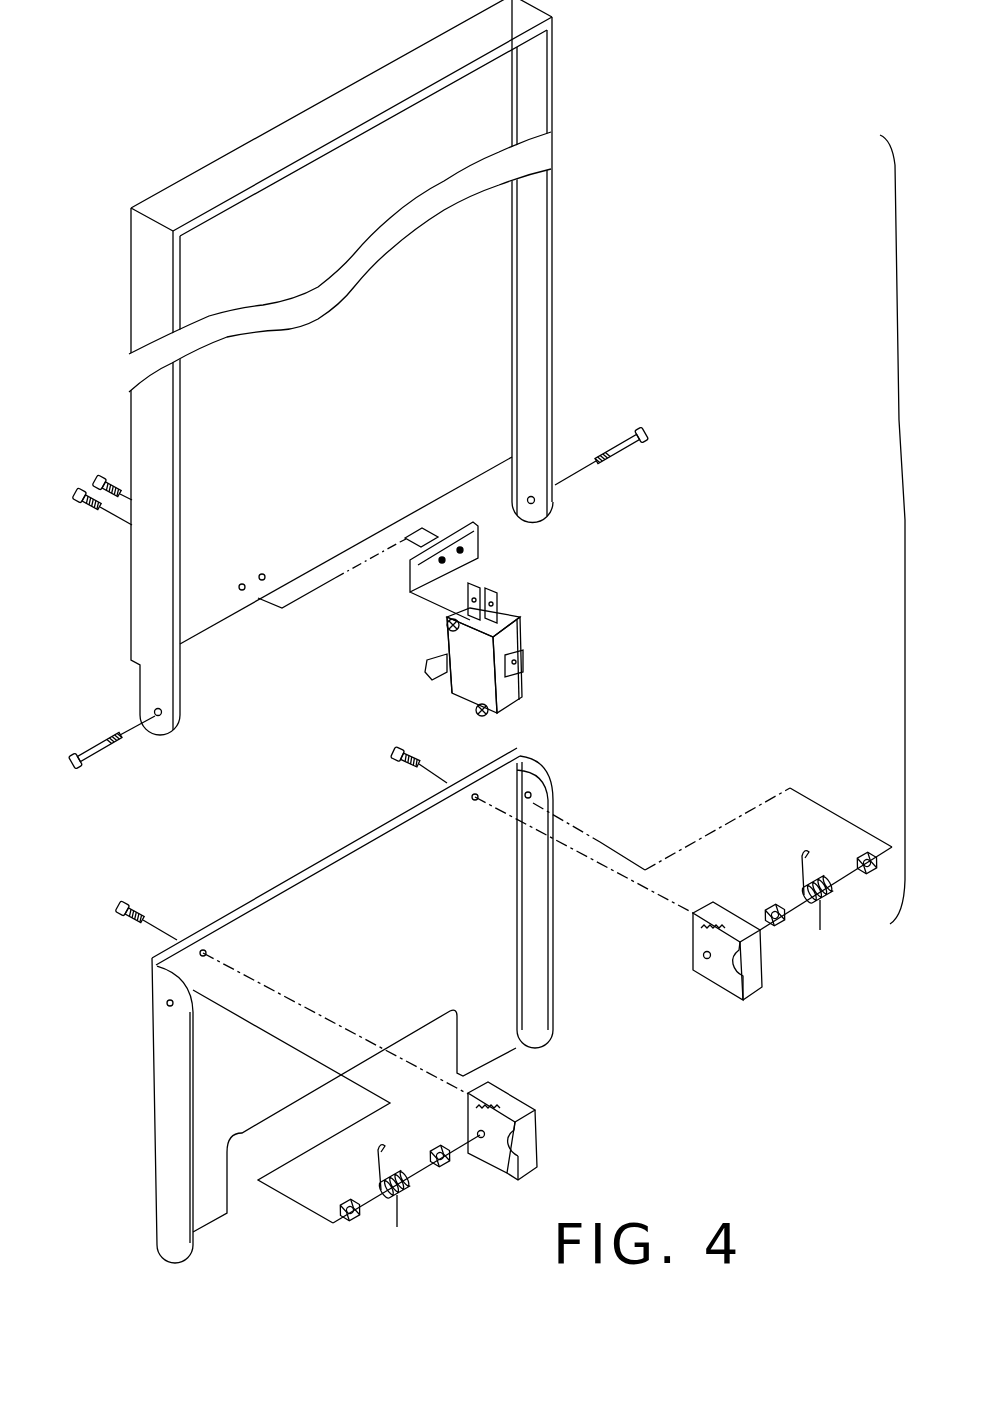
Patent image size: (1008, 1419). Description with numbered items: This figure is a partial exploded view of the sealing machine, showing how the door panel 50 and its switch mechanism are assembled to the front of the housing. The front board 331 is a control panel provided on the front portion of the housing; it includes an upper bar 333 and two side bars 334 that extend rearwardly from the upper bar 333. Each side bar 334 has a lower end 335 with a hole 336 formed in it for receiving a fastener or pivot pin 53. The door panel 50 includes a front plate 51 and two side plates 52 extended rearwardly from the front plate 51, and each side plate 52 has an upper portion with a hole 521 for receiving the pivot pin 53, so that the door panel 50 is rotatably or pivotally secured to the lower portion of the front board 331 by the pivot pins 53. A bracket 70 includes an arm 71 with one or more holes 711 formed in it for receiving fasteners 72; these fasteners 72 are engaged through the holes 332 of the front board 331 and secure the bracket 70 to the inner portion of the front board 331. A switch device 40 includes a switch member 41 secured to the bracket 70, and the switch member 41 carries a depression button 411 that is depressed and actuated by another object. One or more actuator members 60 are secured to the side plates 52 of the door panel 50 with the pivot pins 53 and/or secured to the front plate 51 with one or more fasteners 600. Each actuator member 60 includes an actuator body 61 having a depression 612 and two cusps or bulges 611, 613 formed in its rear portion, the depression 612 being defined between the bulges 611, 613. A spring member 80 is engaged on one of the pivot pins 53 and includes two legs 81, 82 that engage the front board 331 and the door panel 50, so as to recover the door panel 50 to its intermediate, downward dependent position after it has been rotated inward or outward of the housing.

The front board 331 is at (308, 100).
The holes 332 is at (244, 592).
The upper bar 333 is at (227, 175).
The side bars 334 is at (535, 223).
The lower end 335 is at (535, 460).
The hole 336 is at (537, 501).
The fasteners 72 is at (110, 478).
The pivot pin 53 is at (101, 762).
The arm 71 is at (545, 575).
The holes 711 is at (445, 562).
The bracket 70 is at (540, 648).
The switch device 40 is at (521, 659).
The switch member 41 is at (460, 693).
The depression button 411 is at (437, 655).
The door panel 50 is at (372, 1005).
The front plate 51 is at (320, 890).
The side plates 52 is at (540, 917).
The hole 521 is at (532, 793).
The fasteners 600 is at (126, 928).
The actuator member 60 is at (525, 1087).
The actuator body 61 is at (562, 1144).
The bulge 611 is at (522, 1104).
The depression 612 is at (522, 1136).
The bulge 613 is at (531, 1167).
The spring member 80 is at (406, 1185).
The leg 81 is at (387, 1153).
The leg 82 is at (393, 1213).